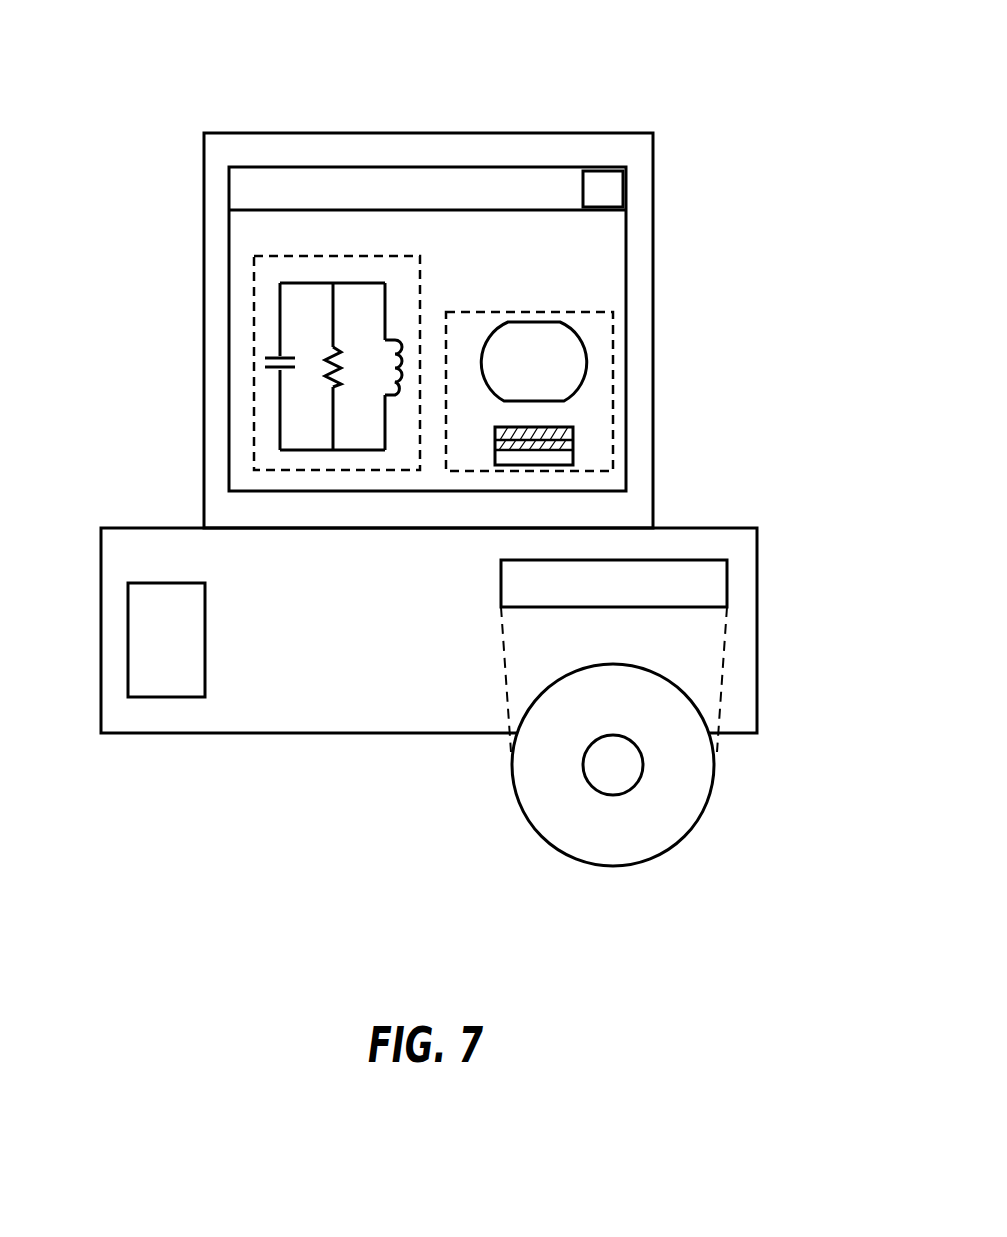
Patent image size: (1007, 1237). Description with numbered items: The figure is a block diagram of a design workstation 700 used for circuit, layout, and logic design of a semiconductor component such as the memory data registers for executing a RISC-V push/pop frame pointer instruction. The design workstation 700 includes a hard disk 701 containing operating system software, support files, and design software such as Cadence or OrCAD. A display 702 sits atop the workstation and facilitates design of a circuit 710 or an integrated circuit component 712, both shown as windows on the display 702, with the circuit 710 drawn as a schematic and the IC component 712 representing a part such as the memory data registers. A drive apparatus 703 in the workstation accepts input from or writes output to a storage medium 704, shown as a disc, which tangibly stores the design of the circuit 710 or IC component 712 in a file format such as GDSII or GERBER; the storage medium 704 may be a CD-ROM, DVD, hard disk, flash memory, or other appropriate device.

The design workstation 700 is at (415, 370).
The hard disk 701 is at (205, 611).
The display 702 is at (607, 132).
The drive apparatus 703 is at (712, 558).
The storage medium 704 is at (609, 866).
The circuit 710 is at (418, 272).
The integrated circuit (IC) component 712 is at (518, 312).